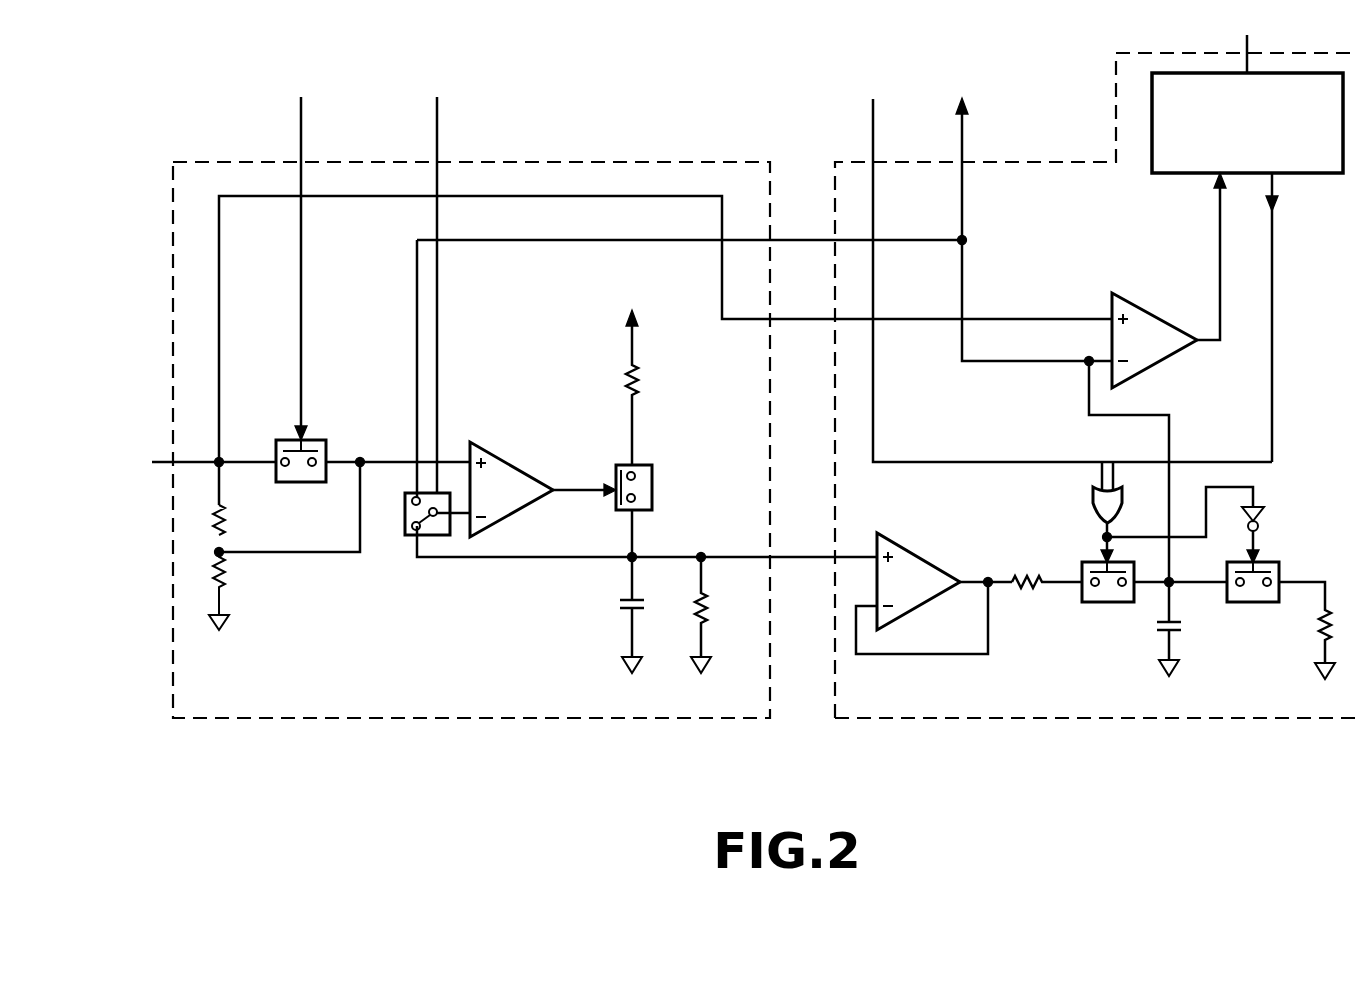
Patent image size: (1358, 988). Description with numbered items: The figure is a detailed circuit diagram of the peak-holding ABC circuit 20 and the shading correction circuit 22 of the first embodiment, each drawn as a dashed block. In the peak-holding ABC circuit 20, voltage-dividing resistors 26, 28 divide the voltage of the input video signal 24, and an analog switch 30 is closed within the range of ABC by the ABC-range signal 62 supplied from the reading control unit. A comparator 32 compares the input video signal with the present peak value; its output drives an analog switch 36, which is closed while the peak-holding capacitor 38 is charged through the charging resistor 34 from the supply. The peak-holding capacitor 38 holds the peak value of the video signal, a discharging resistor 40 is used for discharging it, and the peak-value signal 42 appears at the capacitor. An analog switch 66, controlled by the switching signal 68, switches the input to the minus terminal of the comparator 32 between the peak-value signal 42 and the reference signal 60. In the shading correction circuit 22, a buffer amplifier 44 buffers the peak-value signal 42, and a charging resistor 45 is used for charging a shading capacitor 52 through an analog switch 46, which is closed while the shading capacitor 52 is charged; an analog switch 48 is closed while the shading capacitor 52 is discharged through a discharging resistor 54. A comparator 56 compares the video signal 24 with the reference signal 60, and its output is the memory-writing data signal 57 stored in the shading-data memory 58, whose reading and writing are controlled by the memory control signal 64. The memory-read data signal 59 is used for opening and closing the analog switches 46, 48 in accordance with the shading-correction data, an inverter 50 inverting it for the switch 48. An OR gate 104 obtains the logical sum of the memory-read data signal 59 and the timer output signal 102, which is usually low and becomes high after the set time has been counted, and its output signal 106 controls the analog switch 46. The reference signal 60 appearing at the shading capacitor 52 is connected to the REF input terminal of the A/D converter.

The peak-holding ABC circuit portion 20 is at (563, 162).
The shading correction circuit portion 22 is at (1025, 722).
The input video signal 24 is at (106, 435).
The voltage-dividing resistor 26 is at (232, 522).
The voltage-dividing resistor 28 is at (232, 581).
The analog switch 30 is at (318, 440).
The comparator 32 is at (511, 464).
The charging resistor 34 is at (640, 375).
The analog switch 36 is at (652, 470).
The peak-holding capacitor 38 is at (622, 602).
The discharging resistor 40 is at (690, 606).
The peak-value signal 42 is at (702, 553).
The buffer amplifier 44 is at (918, 555).
The charging resistor 45 is at (1030, 590).
The analog switch 46 is at (1105, 603).
The analog switch 48 is at (1280, 565).
The inverter 50 is at (1255, 505).
The shading capacitor 52 is at (1180, 625).
The discharging resistor 54 is at (1318, 625).
The comparator 56 is at (1140, 300).
The memory-writing data signal 57 is at (1220, 229).
The shading-data memory 58 is at (1320, 176).
The memory-read data signal 59 is at (1272, 352).
The reference signal 60 is at (962, 240).
The ABC-range signal 62 is at (302, 140).
The memory control signal 64 is at (1250, 38).
The analog switch 66 is at (437, 537).
The switching signal 68 is at (437, 135).
The timer unit output signal 102 is at (873, 137).
The OR gate 104 is at (1093, 500).
The OR gate output signal 106 is at (1107, 537).